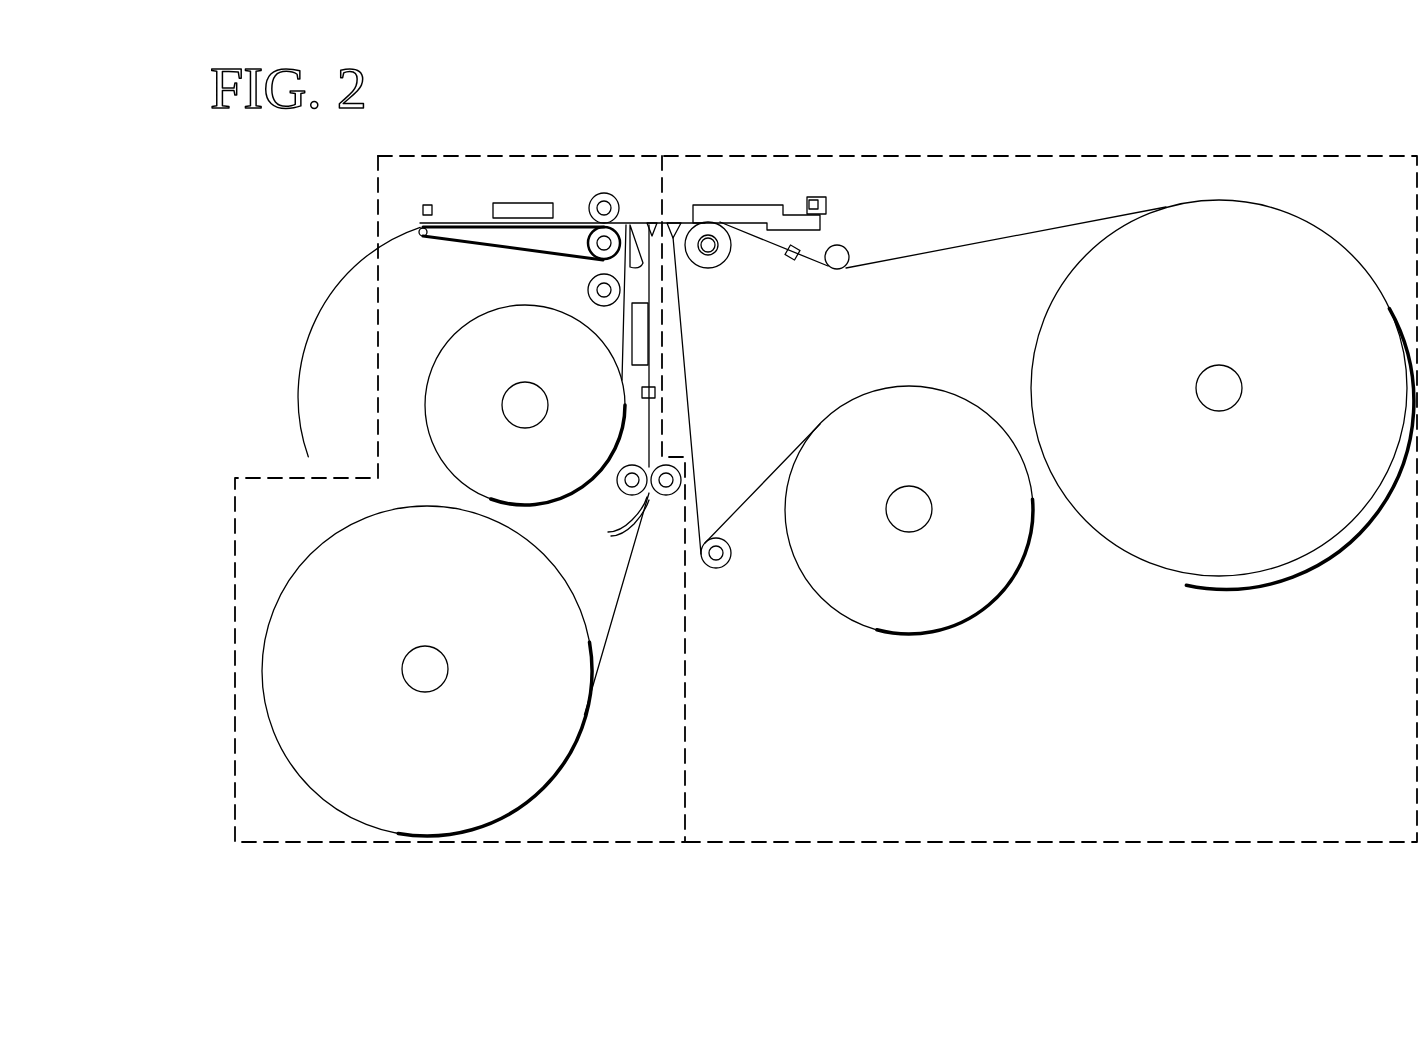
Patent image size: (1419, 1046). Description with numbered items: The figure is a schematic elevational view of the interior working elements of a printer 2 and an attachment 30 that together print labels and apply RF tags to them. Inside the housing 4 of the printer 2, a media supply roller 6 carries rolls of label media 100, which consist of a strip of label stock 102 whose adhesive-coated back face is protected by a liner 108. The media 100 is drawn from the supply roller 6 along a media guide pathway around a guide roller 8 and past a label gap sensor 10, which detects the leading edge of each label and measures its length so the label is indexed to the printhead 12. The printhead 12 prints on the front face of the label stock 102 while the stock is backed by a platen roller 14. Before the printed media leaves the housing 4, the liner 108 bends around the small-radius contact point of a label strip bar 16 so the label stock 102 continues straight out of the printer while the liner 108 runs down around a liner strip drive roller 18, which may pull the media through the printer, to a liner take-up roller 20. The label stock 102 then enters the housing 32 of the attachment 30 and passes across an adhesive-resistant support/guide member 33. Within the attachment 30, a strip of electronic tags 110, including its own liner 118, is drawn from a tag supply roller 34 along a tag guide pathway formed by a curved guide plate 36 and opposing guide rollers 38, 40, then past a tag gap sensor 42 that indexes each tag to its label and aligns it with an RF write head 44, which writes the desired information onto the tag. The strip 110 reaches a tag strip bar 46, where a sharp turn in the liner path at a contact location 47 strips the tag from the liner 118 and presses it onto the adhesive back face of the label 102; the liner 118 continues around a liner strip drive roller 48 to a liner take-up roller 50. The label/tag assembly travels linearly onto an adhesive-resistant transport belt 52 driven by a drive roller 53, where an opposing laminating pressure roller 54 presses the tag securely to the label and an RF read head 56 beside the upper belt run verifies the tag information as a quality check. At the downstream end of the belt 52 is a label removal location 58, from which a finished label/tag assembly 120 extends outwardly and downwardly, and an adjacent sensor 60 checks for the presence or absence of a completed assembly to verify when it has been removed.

The printer 2 is at (1078, 856).
The housing 4 is at (953, 156).
The media supply roller 6 is at (1226, 399).
The guide roller 8 is at (850, 253).
The label gap sensor 10 is at (793, 260).
The printhead 12 is at (757, 203).
The platen roller 14 is at (725, 258).
The label strip bar 16 is at (673, 218).
The liner strip drive roller 18 is at (723, 570).
The liner take-up roller 20 is at (915, 522).
The attachment 30 is at (538, 861).
The housing 32 is at (233, 643).
The support/guide member 33 is at (640, 257).
The tag supply roller 34 is at (427, 684).
The curved guide plate 36 is at (608, 532).
The guide roller 38 is at (618, 491).
The guide roller 40 is at (668, 497).
The tag gap sensor 42 is at (655, 392).
The RF write head 44 is at (628, 342).
The tag strip bar 46 is at (668, 270).
The contact location 47 is at (627, 218).
The liner strip drive roller 48 is at (602, 306).
The liner take-up roller 50 is at (535, 413).
The transport belt 52 is at (450, 242).
The drive roller 53 is at (588, 243).
The laminating pressure roller 54 is at (593, 200).
The RF read head 56 is at (515, 202).
The label removal location 58 is at (420, 230).
The sensor 60 is at (428, 204).
The label media 100 is at (998, 242).
The label stock 102 is at (657, 218).
The liner 108 is at (690, 442).
The strip of electronic tags 110 is at (610, 634).
The liner 118 is at (577, 307).
The label/tag assembly 120 is at (302, 355).